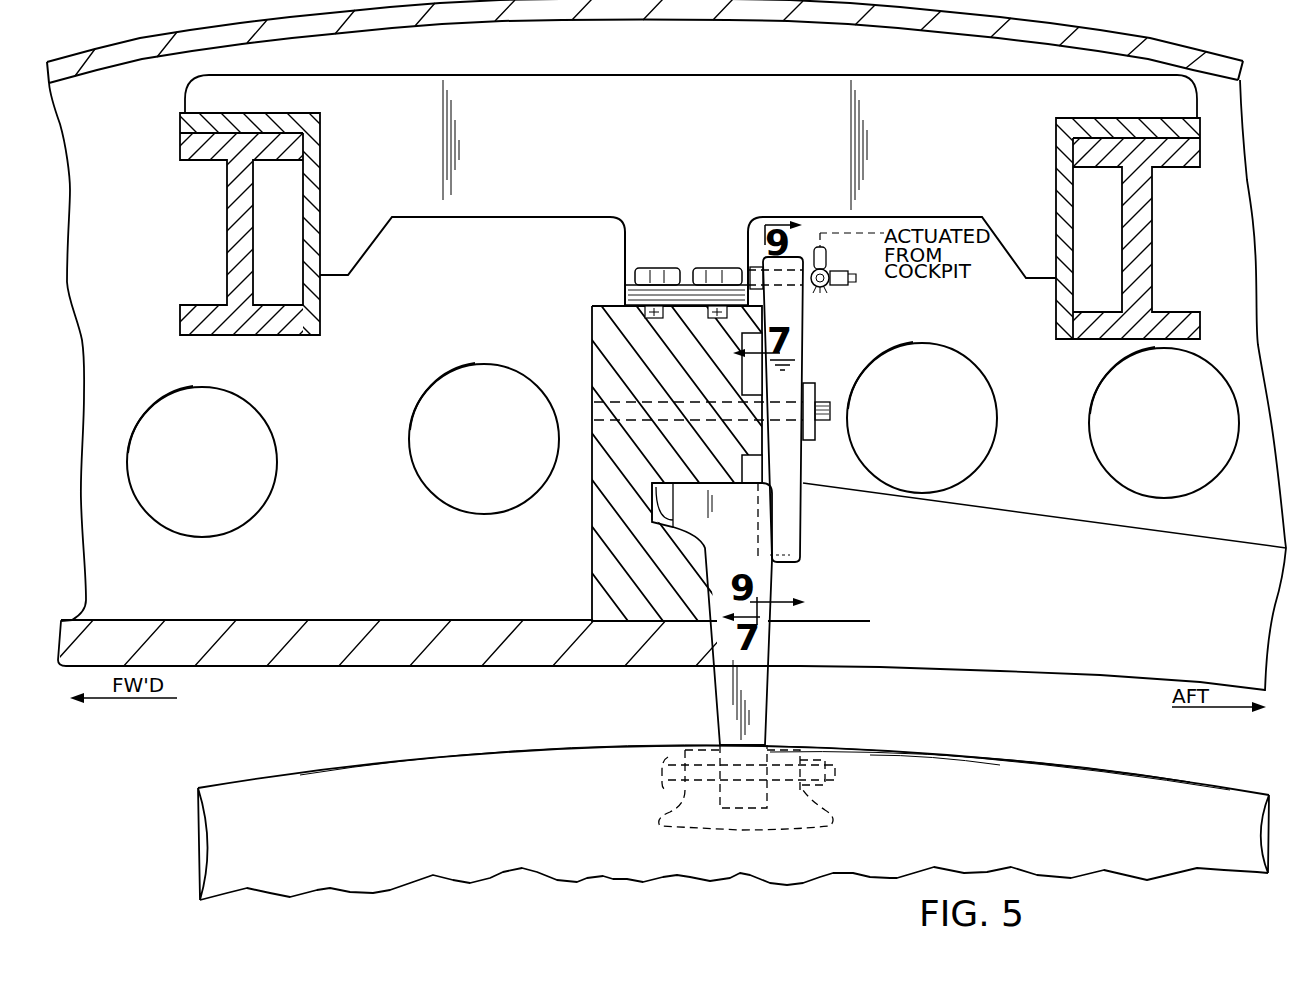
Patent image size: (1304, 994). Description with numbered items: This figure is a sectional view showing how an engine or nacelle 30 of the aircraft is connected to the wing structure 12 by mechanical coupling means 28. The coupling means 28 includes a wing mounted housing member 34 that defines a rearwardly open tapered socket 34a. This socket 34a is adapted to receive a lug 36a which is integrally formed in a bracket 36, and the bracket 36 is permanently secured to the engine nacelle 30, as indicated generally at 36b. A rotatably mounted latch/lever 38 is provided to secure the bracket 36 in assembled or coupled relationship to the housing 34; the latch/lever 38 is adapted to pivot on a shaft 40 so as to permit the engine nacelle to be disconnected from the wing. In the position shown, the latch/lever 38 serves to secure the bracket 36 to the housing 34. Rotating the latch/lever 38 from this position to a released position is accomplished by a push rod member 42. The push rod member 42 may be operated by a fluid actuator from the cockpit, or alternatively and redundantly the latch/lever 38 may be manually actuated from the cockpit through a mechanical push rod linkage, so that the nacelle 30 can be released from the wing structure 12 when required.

The wing structure 12 is at (368, 666).
The mechanical coupling means 28 is at (588, 571).
The engine 30 is at (445, 750).
The wing mounted housing member 34 is at (594, 327).
The tapered socket 34a is at (665, 487).
The bracket 36 is at (772, 634).
The lug 36a is at (652, 521).
The bracket securing means 36b is at (810, 741).
The latch/lever 38 is at (803, 318).
The shaft 40 is at (630, 400).
The push rod member 42 is at (830, 262).